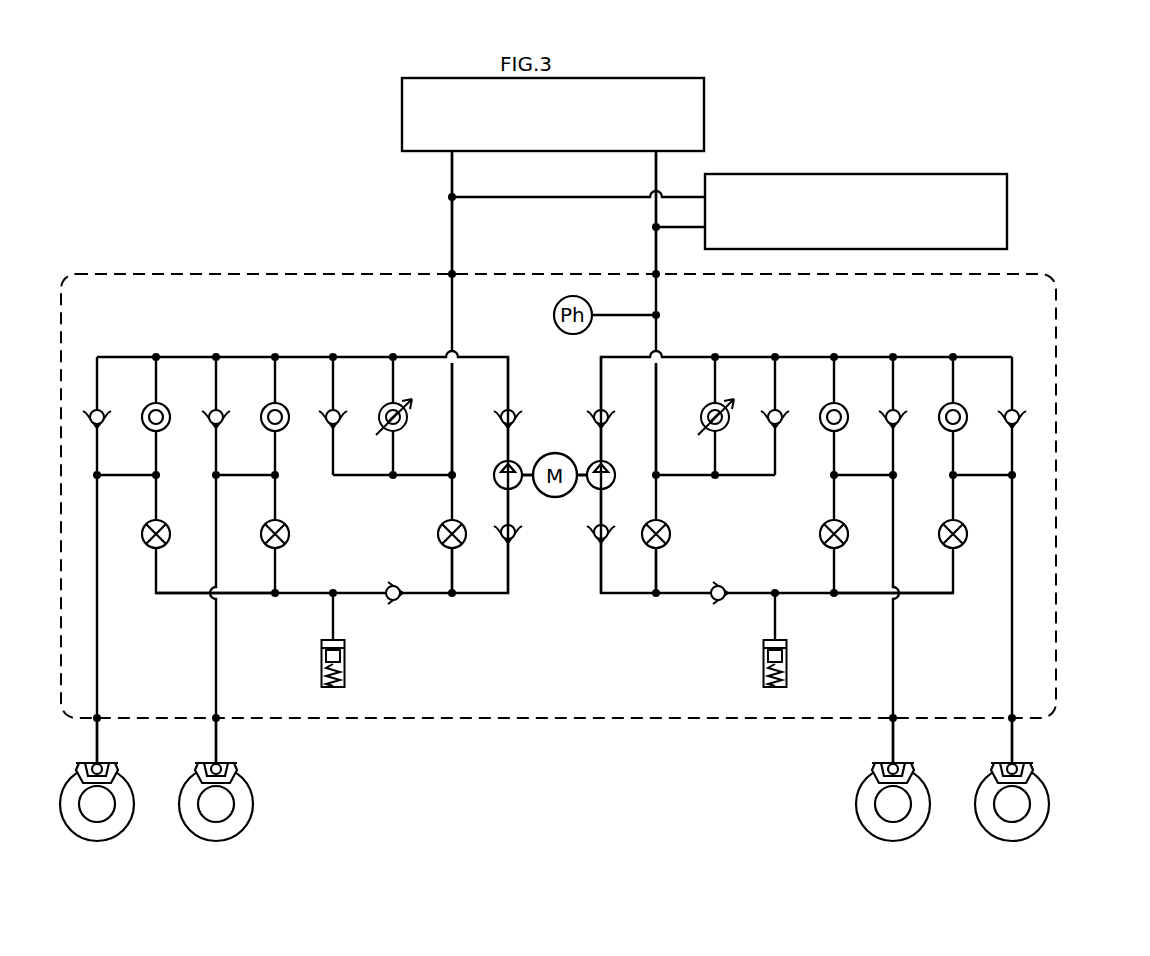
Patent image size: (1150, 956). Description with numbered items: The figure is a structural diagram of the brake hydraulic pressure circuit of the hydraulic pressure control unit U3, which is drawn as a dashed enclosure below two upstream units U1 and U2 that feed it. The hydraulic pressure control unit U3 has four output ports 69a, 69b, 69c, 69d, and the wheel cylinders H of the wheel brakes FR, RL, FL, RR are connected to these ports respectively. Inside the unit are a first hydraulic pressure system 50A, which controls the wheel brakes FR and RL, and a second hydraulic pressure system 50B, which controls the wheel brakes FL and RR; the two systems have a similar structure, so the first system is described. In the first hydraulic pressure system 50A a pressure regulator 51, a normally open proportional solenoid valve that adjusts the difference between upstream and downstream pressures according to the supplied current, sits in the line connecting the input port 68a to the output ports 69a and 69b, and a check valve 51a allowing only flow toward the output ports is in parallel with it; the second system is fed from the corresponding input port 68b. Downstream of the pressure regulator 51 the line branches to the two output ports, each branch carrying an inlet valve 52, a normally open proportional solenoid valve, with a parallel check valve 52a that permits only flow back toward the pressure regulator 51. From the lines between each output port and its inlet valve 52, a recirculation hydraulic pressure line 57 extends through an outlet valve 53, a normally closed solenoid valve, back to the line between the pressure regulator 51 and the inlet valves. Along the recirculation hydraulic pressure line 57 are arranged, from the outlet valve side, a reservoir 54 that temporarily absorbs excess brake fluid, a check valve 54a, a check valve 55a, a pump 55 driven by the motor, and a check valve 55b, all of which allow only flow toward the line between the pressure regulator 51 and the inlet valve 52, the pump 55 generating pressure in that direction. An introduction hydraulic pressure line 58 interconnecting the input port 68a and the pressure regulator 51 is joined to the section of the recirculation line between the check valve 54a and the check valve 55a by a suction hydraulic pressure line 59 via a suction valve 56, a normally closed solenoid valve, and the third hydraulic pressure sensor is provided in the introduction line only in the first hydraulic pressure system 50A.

The first control unit U1 is at (718, 117).
The second control unit U2 is at (948, 168).
The hydraulic pressure control unit U3 is at (1057, 325).
The first hydraulic pressure system 50A is at (922, 316).
The second hydraulic pressure system 50B is at (184, 320).
The pressure regulator 51 is at (402, 428).
The check valve 51a is at (342, 411).
The inlet valve 52 is at (165, 408).
The check valve 52a is at (101, 410).
The outlet valve 53 is at (148, 523).
The reservoir 54 is at (320, 658).
The check valve 54a is at (399, 606).
The pump 55 is at (497, 467).
The check valve 55a is at (502, 526).
The check valve 55b is at (503, 413).
The suction valve 56 is at (438, 532).
The recirculation hydraulic pressure line 57 is at (483, 358).
The introduction hydraulic pressure line 58 is at (452, 378).
The suction hydraulic pressure line 59 is at (452, 565).
The input port 68a is at (652, 271).
The pipe 68b is at (449, 271).
The output port 69a is at (1018, 720).
The output port 69b is at (899, 720).
The output port 69c is at (222, 720).
The output port 69d is at (103, 720).
The wheel cylinder H is at (112, 762).
The wheel brake FL is at (134, 818).
The wheel brake RR is at (253, 818).
The wheel brake RL is at (930, 818).
The wheel brake FR is at (1049, 818).